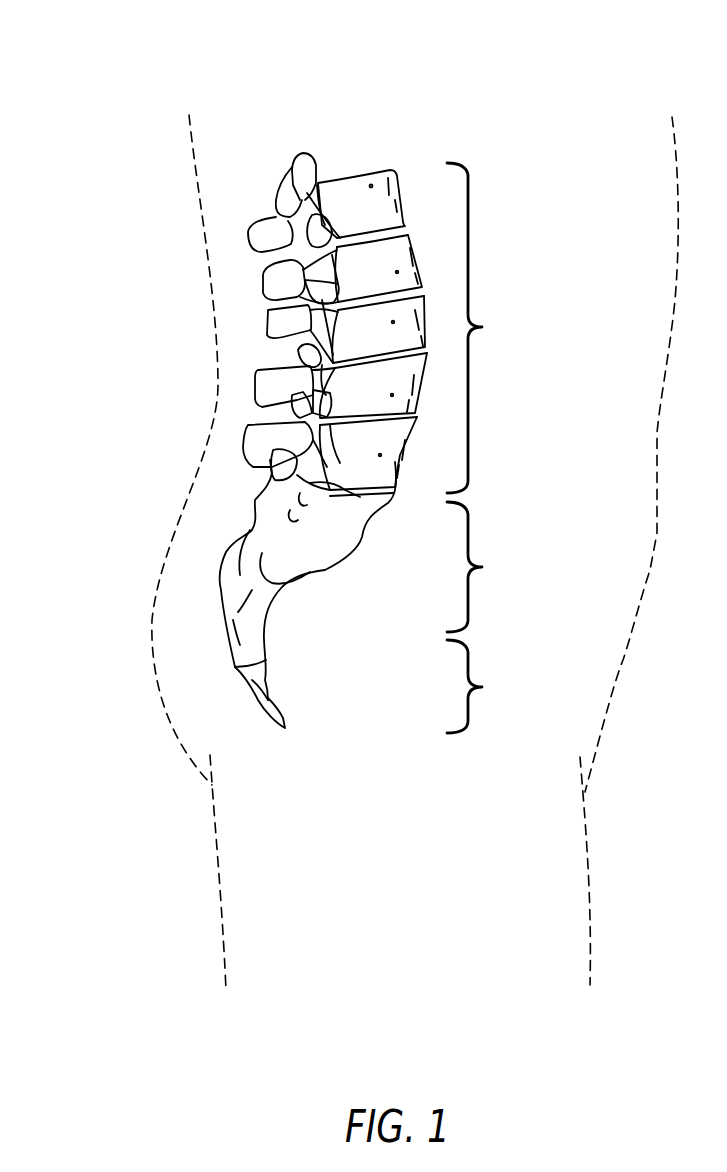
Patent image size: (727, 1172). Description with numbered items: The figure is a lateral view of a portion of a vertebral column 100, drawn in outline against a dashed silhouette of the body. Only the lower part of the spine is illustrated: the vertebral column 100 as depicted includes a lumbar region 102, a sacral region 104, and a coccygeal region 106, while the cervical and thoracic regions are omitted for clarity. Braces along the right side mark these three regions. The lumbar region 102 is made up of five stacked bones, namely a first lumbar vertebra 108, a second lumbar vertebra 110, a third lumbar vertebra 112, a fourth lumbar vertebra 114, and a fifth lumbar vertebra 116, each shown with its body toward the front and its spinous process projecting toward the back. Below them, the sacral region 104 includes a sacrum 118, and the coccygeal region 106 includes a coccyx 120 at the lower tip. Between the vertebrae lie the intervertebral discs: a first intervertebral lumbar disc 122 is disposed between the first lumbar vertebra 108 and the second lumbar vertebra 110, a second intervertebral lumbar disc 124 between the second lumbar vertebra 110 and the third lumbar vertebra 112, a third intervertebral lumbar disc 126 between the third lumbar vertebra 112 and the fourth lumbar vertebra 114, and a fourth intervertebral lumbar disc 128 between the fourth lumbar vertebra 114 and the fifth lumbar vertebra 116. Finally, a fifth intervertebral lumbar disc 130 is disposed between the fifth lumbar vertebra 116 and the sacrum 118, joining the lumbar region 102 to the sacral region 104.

The vertebral column 100 is at (583, 116).
The lumbar region 102 is at (480, 328).
The sacral region 104 is at (480, 567).
The coccygeal region 106 is at (480, 687).
The first lumbar vertebra 108 is at (345, 200).
The second lumbar vertebra 110 is at (340, 262).
The third lumbar vertebra 112 is at (355, 335).
The fourth lumbar vertebra 114 is at (358, 388).
The fifth lumbar vertebra 116 is at (350, 460).
The sacrum 118 is at (260, 587).
The coccyx 120 is at (252, 695).
The first intervertebral lumbar disc 122 is at (368, 238).
The second intervertebral lumbar disc 124 is at (370, 298).
The third intervertebral lumbar disc 126 is at (360, 358).
The fourth intervertebral lumbar disc 128 is at (360, 420).
The fifth intervertebral lumbar disc 130 is at (372, 490).